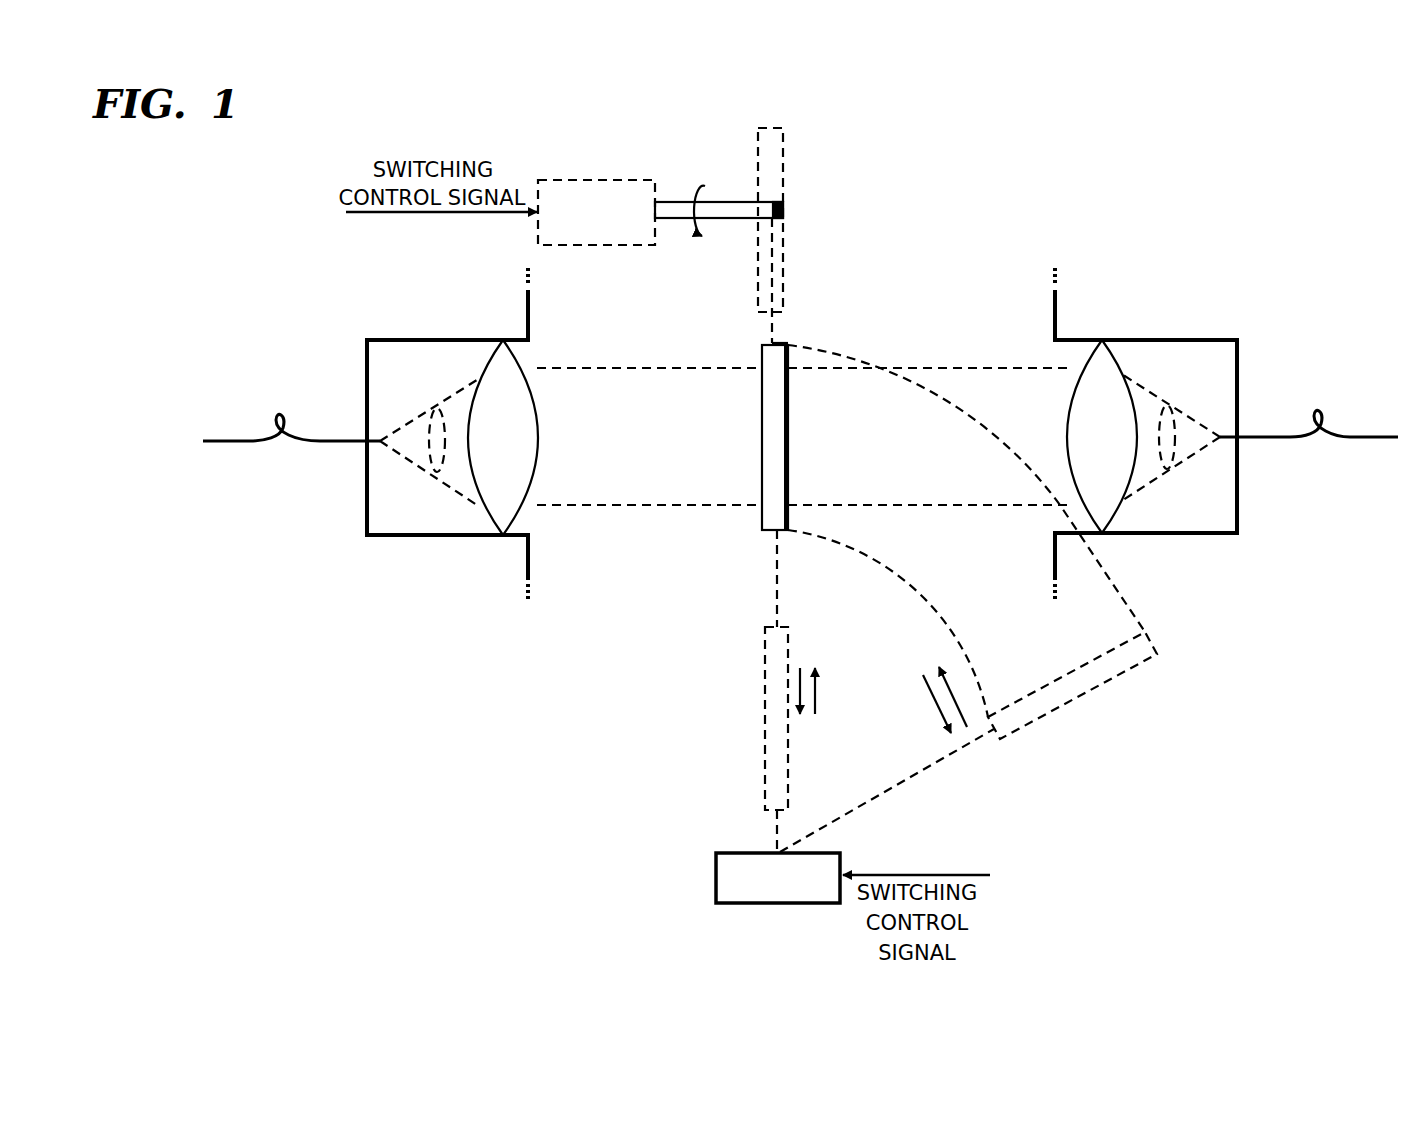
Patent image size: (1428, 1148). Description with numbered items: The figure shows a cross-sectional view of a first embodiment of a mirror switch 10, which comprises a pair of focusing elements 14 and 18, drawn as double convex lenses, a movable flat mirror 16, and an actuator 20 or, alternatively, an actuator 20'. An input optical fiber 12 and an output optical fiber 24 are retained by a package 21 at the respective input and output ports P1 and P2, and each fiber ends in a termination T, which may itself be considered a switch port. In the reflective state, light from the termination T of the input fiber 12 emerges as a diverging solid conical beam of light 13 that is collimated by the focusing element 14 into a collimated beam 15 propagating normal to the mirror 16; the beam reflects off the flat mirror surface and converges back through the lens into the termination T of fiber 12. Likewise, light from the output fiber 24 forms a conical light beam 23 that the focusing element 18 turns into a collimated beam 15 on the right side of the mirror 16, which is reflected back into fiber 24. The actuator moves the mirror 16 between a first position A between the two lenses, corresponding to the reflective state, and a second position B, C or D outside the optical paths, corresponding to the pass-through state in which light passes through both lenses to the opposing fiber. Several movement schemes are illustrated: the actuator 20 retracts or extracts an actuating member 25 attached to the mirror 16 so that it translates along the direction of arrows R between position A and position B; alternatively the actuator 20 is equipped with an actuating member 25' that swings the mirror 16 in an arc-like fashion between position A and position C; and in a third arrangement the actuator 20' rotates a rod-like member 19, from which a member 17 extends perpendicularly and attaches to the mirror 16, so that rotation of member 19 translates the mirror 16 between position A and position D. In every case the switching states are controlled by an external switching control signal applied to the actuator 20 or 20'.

The mirror switch 10 is at (1198, 258).
The input optical fiber 12 is at (258, 445).
The conical beam of light 13 is at (428, 424).
The focusing element 14 is at (503, 437).
The collimated beam 15 is at (608, 372).
The movable flat mirror 16 is at (783, 245).
The member 17 is at (790, 338).
The focusing element 18 is at (1102, 436).
The rod-like member 19 is at (737, 200).
The actuator 20 is at (746, 878).
The actuator 20' is at (596, 176).
The package 21 is at (380, 340).
The conical light beam 23 is at (1170, 412).
The output optical fiber 24 is at (1385, 442).
The actuating member 25 is at (756, 691).
The actuating member 25' is at (892, 790).
The first mirror position A is at (746, 516).
The pass-through position B is at (752, 698).
The pass-through position C is at (1150, 679).
The pass-through position D is at (795, 188).
The arrows R is at (818, 700).
The termination T is at (385, 450).
The input port P1 is at (367, 436).
The output port P2 is at (1240, 434).